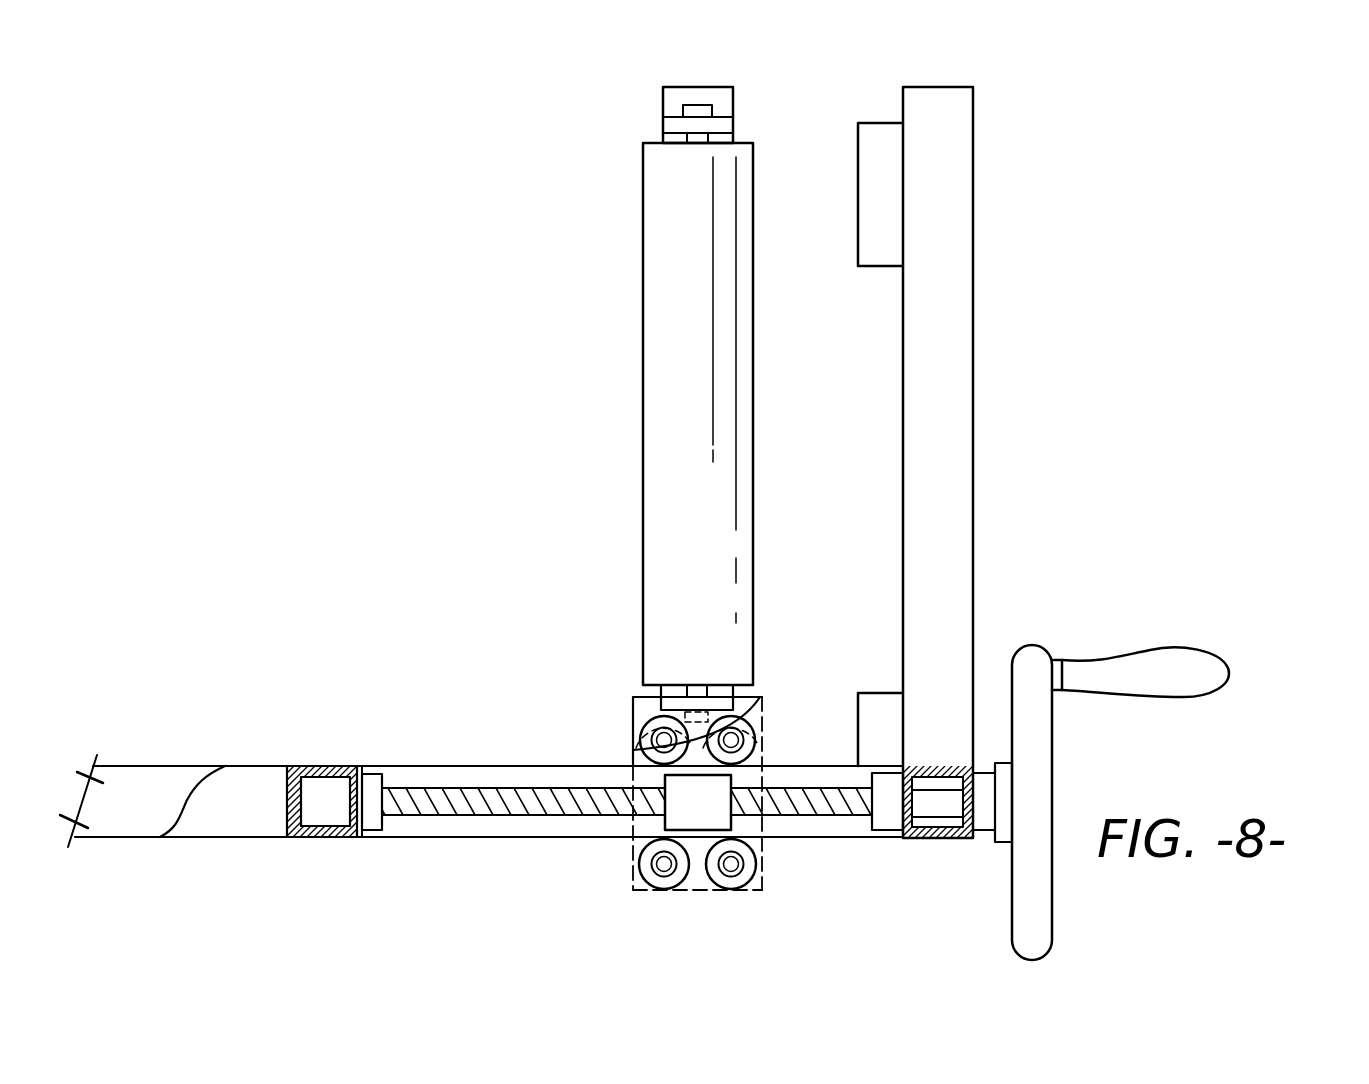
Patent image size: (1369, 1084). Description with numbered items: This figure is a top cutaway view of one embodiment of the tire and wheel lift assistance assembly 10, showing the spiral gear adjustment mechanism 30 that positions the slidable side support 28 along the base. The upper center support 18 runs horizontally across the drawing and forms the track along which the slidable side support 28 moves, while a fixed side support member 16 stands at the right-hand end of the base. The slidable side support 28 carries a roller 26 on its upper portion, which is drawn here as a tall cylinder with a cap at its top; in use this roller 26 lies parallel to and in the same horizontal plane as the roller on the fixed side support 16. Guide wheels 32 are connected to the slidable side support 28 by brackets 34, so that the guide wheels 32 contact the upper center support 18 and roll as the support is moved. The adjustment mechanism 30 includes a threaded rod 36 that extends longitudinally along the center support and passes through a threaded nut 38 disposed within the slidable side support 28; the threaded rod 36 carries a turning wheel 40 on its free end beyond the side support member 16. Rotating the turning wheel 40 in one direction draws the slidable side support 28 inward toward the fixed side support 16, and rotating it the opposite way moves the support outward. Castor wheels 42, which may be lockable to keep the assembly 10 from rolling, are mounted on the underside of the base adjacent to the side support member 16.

The tire and wheel lift assistance assembly 10 is at (490, 706).
The side support member 16 is at (950, 352).
The upper center support 18 is at (255, 785).
The roller 26 is at (668, 350).
The slidable side support 28 is at (676, 80).
The adjustment mechanism 30 is at (750, 800).
The guide wheels 32 is at (653, 877).
The brackets 34 is at (703, 893).
The threaded rod 36 is at (447, 798).
The threaded nut 38 is at (683, 798).
The turning wheel 40 is at (1034, 645).
The castor wheels 42 is at (880, 136).